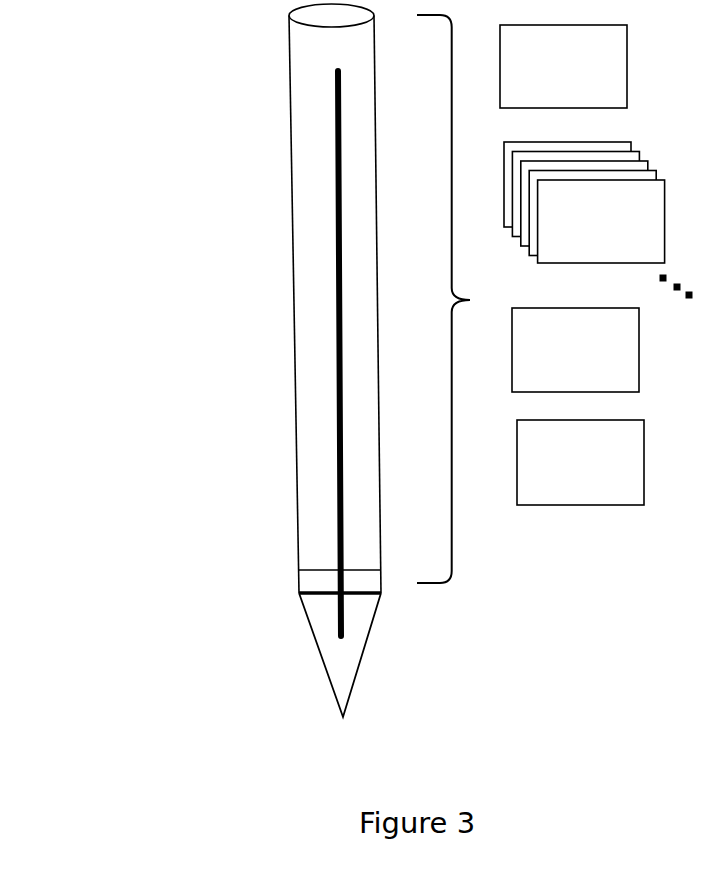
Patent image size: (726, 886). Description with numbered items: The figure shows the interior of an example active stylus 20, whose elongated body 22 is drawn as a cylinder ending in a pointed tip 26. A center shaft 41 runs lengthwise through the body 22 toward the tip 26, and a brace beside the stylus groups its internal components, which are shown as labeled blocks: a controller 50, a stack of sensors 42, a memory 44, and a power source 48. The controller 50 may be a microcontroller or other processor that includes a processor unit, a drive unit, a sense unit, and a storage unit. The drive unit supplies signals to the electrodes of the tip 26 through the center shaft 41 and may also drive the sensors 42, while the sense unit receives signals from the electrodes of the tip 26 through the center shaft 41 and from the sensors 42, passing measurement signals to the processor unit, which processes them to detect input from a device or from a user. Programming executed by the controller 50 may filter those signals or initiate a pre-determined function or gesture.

The active stylus 20 is at (272, 360).
The housing body 22 is at (291, 206).
The tip 26 is at (370, 652).
The center shaft 41 is at (333, 507).
The sensors 42 is at (598, 220).
The memory 44 is at (575, 350).
The power source 48 is at (580, 462).
The controller 50 is at (563, 66).